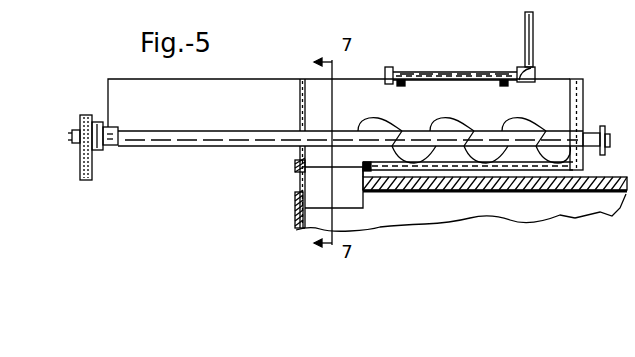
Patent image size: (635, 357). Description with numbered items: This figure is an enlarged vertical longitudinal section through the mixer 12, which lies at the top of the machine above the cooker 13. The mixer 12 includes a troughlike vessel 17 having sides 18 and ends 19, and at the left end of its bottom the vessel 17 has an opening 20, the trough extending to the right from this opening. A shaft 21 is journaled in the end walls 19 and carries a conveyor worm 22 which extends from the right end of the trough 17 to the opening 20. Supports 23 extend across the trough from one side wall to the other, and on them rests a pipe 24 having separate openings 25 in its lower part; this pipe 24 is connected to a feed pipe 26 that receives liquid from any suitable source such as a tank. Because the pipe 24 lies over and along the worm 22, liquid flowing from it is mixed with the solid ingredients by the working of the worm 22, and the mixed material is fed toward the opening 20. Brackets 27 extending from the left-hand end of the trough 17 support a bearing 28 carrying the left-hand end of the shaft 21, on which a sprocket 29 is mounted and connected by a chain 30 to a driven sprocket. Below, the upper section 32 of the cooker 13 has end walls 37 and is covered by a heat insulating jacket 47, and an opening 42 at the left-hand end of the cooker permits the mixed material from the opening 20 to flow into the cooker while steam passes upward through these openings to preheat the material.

The mixer 12 is at (462, 90).
The cooker 13 is at (508, 200).
The troughlike vessel 17 is at (532, 95).
The sides 18 is at (552, 88).
The ends 19 is at (300, 99).
The opening 20 is at (315, 172).
The shaft 21 is at (300, 152).
The conveyor worm 22 is at (470, 191).
The supports 23 is at (398, 83).
The pipe 24 is at (425, 77).
The openings 25 is at (452, 82).
The feed pipe 26 is at (534, 25).
The brackets 27 is at (125, 88).
The bearing 28 is at (114, 147).
The sprocket 29 is at (97, 152).
The chain 30 is at (80, 168).
The upper section 32 is at (578, 195).
The end walls 37 is at (296, 220).
The opening 42 is at (298, 197).
The heat insulating jacket 47 is at (426, 188).